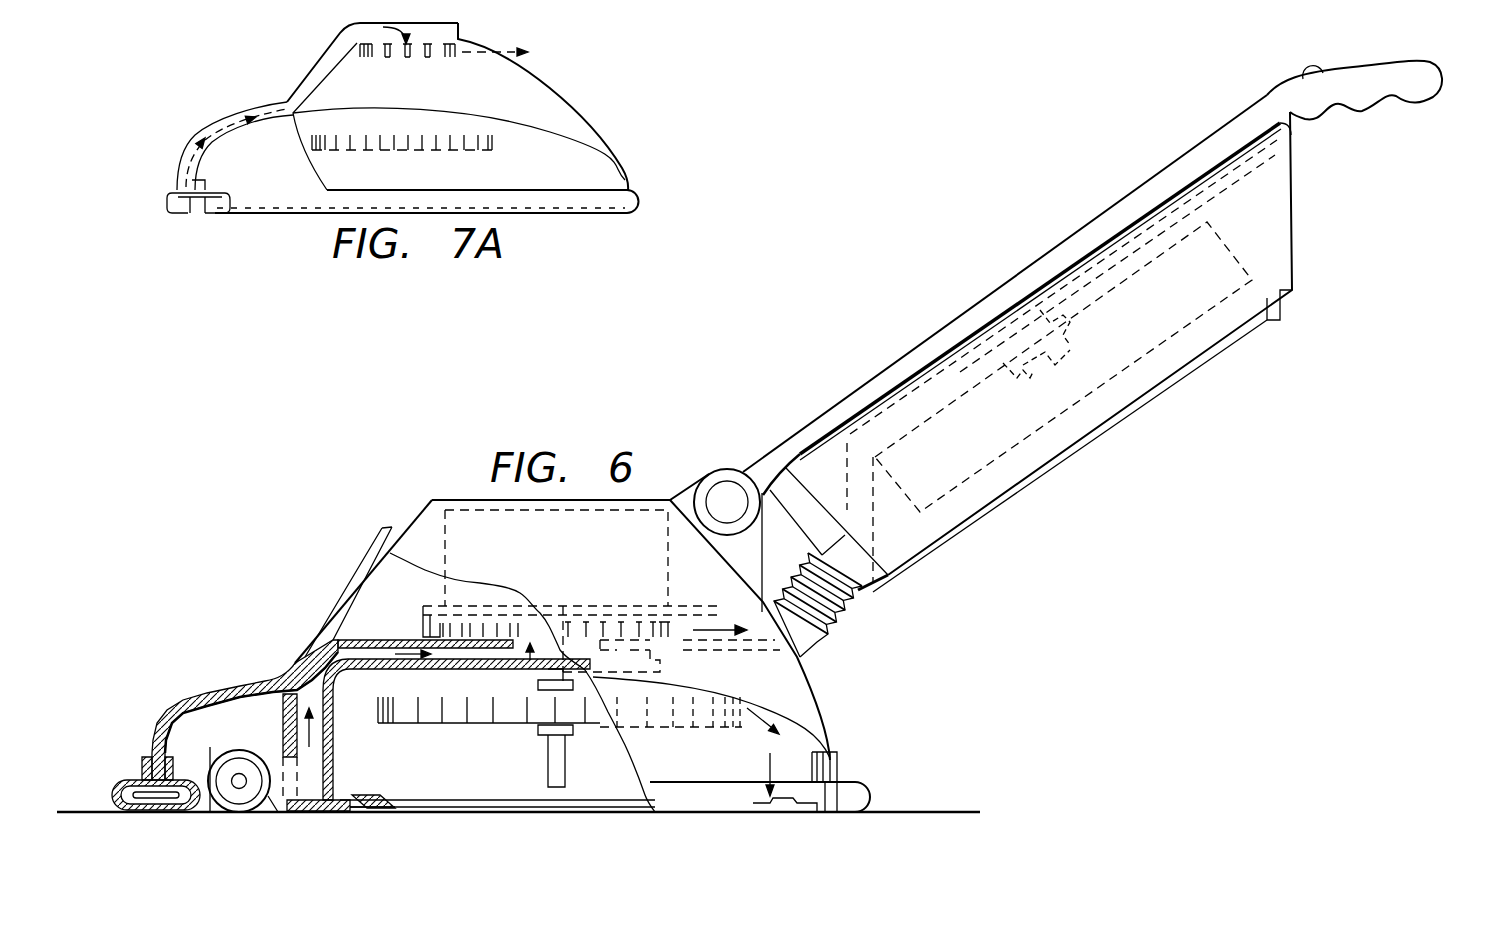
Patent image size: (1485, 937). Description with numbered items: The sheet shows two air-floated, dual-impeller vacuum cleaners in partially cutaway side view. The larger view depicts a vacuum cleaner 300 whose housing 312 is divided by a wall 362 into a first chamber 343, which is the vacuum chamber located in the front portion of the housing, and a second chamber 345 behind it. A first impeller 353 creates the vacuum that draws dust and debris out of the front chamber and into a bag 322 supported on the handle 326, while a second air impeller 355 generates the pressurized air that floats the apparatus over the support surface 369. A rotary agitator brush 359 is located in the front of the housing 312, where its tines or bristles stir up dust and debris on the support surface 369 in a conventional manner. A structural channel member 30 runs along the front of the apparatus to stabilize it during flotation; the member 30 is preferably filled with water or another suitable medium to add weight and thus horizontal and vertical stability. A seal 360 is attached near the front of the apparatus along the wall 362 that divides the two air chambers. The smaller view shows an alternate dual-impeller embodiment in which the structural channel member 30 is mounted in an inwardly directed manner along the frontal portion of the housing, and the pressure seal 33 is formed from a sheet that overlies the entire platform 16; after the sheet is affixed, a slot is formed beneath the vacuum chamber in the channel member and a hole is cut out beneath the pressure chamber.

In FIG. 6, the dual-impeller vacuum cleaner 300 is at (230, 592).
In FIG. 6, the housing 312 is at (163, 684).
In FIG. 6, the structural channel member 30 is at (124, 760).
In FIG. 6, the first chamber 343 is at (218, 746).
In FIG. 6, the rotary agitator brush 359 is at (238, 800).
In FIG. 6, the seal 360 is at (368, 808).
In FIG. 6, the second chamber 345 is at (451, 795).
In FIG. 6, the second air impeller 355 is at (508, 725).
In FIG. 6, the wall 362 is at (335, 731).
In FIG. 6, the first impeller 353 is at (507, 627).
In FIG. 6, the handle 326 is at (1100, 217).
In FIG. 6, the bag 322 is at (1292, 232).
In FIG. 6, the floor surface 369 is at (932, 814).
In FIG. 7A, the platform 16 is at (283, 198).
In FIG. 7A, the pressure seal 33 is at (223, 222).